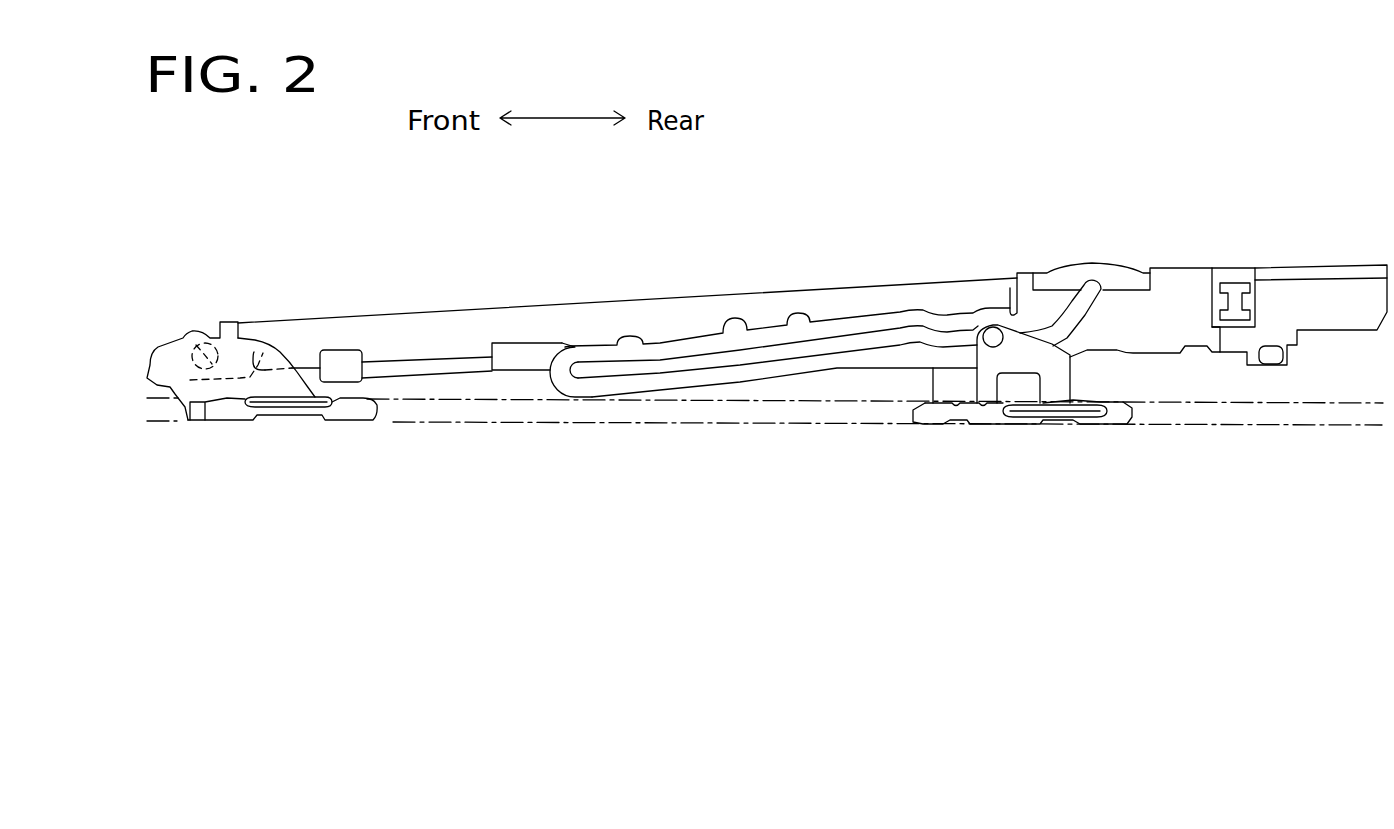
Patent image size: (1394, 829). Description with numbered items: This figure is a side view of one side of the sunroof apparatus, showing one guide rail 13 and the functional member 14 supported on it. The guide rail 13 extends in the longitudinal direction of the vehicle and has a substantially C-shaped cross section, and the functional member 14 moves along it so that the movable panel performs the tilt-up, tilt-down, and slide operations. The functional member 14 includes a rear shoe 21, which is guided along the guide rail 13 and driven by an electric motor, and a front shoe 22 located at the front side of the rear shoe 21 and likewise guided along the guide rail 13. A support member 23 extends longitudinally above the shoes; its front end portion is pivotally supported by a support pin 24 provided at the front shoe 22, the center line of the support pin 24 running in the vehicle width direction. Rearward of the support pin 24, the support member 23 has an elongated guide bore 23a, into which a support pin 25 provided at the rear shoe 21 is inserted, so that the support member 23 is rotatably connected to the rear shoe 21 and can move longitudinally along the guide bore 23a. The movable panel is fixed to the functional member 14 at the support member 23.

The guide rail 13 is at (742, 422).
The functional member 14 is at (1149, 212).
The rear shoe 21 is at (983, 418).
The front shoe 22 is at (225, 410).
The support member 23 is at (497, 318).
The guide bore 23a is at (818, 344).
The support pin 24 is at (200, 336).
The support pin 25 is at (997, 325).